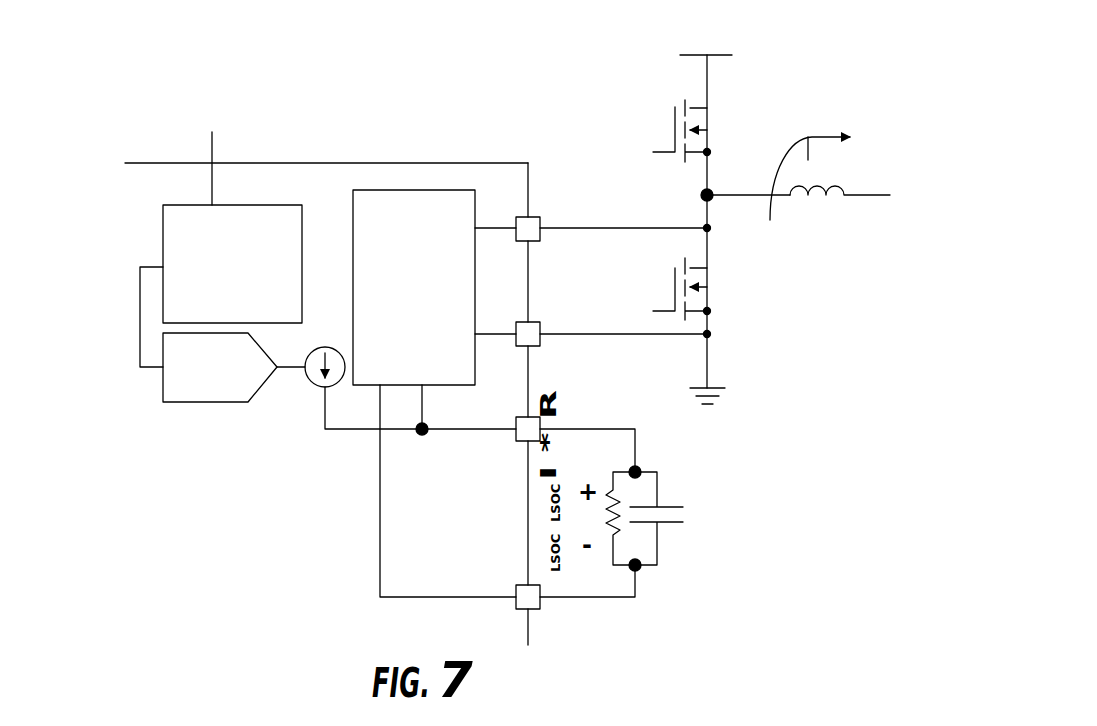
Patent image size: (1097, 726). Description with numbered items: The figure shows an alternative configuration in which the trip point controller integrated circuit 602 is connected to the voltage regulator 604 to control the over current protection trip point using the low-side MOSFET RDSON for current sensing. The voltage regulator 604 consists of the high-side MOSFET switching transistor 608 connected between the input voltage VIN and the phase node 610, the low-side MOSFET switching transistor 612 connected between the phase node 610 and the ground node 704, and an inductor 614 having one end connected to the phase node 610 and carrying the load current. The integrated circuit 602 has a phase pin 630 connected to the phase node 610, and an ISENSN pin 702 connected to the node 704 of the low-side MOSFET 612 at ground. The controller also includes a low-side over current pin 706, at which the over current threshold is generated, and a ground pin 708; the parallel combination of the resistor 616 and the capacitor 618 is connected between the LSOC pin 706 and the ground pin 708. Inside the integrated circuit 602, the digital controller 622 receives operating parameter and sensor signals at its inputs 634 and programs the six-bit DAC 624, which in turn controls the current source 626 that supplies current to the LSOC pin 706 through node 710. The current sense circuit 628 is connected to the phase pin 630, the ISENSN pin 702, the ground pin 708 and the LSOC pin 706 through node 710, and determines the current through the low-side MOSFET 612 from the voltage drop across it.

The integrated circuit 602 is at (230, 162).
The voltage regulator 604 is at (780, 85).
The high-side MOSFET switching transistor 608 is at (700, 118).
The phase node 610 is at (710, 193).
The low-side MOSFET switching transistor 612 is at (700, 284).
The inductor 614 is at (845, 200).
The resistor 616 is at (613, 518).
The capacitor 618 is at (670, 506).
The digital controller 622 is at (163, 241).
The 6-bit DAC 624 is at (271, 218).
The current source 626 is at (311, 381).
The current sense circuit 628 is at (353, 240).
The phase pin 630 is at (518, 220).
The inputs 634 is at (212, 148).
The ISENSN pin 702 is at (535, 347).
The ground node 704 is at (709, 338).
The low-side over current pin (LSOC) 706 is at (543, 417).
The ground pin 708 is at (536, 610).
The node 710 is at (422, 436).